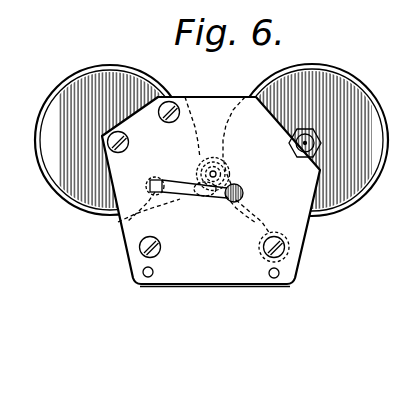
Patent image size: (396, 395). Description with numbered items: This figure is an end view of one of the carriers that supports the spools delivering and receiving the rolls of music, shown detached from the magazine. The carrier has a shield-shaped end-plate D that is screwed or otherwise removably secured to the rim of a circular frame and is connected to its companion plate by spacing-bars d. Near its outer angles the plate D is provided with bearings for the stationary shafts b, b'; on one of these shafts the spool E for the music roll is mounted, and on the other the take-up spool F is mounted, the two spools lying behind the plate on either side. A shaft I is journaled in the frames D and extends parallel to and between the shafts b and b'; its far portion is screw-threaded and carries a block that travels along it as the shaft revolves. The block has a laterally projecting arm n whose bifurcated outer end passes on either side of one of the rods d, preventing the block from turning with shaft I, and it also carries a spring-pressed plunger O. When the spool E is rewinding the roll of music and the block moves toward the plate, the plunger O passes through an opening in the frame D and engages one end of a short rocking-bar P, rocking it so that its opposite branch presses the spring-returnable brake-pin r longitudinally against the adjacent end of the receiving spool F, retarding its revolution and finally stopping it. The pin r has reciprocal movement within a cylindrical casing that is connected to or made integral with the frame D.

The take-up spool F is at (77, 73).
The music roll spool E is at (339, 72).
The end-plate D is at (211, 213).
The stationary shaft b is at (289, 142).
The stationary shaft b' is at (135, 143).
The spacing-bar d is at (140, 251).
The shaft I is at (199, 166).
The rocking-bar P is at (175, 203).
The plunger O is at (242, 190).
The laterally projecting arm n is at (259, 220).
The brake-pin r is at (123, 217).